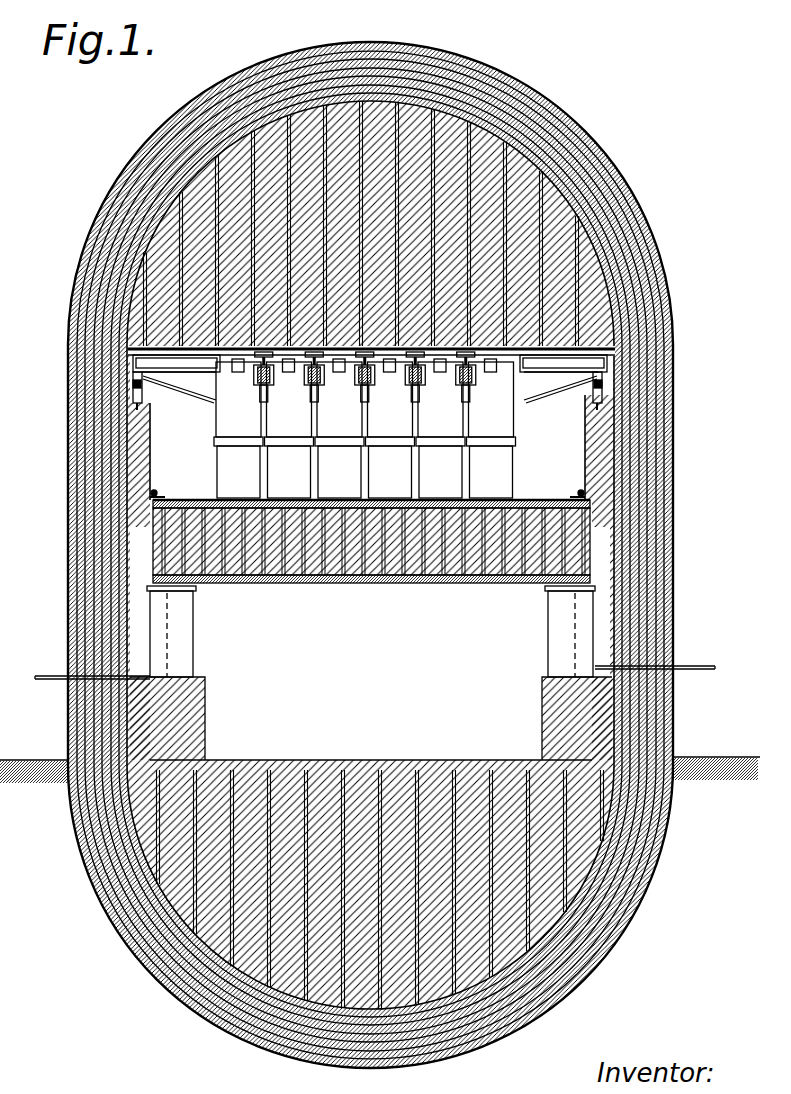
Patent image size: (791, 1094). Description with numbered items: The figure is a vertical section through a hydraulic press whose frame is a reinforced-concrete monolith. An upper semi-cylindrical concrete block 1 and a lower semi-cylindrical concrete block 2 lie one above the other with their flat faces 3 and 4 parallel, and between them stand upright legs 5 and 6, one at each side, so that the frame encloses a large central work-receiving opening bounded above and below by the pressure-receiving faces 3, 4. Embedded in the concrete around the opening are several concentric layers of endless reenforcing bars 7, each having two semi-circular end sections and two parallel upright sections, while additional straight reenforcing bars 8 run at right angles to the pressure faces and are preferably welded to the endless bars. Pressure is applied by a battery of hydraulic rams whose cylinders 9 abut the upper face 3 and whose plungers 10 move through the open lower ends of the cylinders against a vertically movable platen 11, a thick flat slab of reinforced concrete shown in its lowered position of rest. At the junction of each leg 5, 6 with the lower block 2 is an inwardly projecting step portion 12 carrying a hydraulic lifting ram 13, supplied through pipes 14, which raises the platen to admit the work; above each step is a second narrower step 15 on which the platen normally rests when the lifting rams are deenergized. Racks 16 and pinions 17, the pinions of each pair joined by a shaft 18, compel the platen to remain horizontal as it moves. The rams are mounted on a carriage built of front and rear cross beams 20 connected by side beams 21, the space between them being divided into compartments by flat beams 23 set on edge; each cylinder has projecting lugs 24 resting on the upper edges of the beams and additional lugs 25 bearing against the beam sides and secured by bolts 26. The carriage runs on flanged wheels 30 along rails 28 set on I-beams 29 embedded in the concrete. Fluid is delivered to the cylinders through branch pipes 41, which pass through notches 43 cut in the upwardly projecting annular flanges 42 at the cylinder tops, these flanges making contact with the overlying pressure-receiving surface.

The upper semi-cylindrical concrete block 1 is at (553, 97).
The lower semi-cylindrical concrete block 2 is at (617, 947).
The upper pressure-receiving face 3 is at (615, 347).
The lower pressure-receiving face 4 is at (358, 36).
The upright concrete section or leg 5 is at (673, 490).
The upright concrete section or leg 6 is at (385, 318).
The endless reenforcing bars 7 is at (611, 256).
The straight reenforcing bars 8 is at (378, 942).
The ram cylinders 9 is at (272, 418).
The plungers 10 is at (365, 472).
The vertically movable platen 11 is at (390, 583).
The step portion 12 is at (205, 703).
The hydraulic lifting rams 13 is at (195, 626).
The pipes 14 is at (50, 679).
The second narrower step 15 is at (147, 590).
The racks 16 is at (151, 443).
The pinions 17 is at (155, 492).
The shaft 18 is at (157, 495).
The front and rear cross beams 20 is at (370, 390).
The side beams 21 is at (370, 399).
The flat beams 23 is at (363, 401).
The projecting lugs 24 is at (352, 381).
The additional lugs 25 is at (365, 375).
The bolts 26 is at (383, 378).
The rails 28 is at (135, 382).
The I-beams 29 is at (142, 400).
The flanged wheels 30 is at (133, 362).
The branch pipes 41 is at (148, 350).
The annular flanges or rims 42 is at (363, 361).
The notches 43 is at (363, 361).